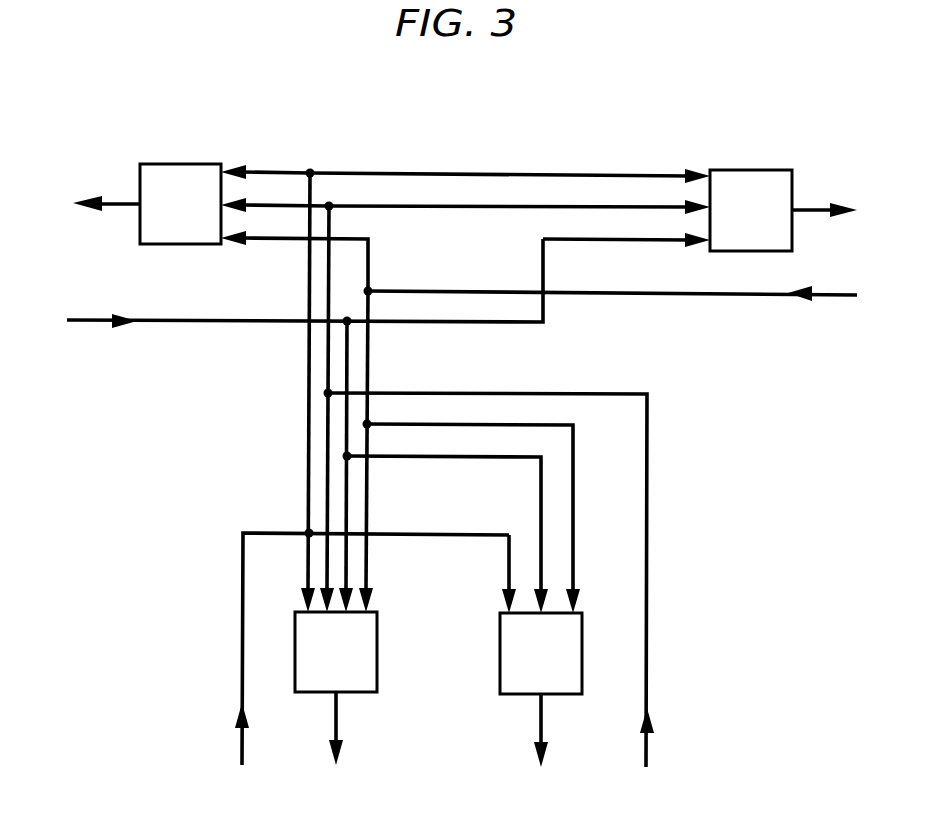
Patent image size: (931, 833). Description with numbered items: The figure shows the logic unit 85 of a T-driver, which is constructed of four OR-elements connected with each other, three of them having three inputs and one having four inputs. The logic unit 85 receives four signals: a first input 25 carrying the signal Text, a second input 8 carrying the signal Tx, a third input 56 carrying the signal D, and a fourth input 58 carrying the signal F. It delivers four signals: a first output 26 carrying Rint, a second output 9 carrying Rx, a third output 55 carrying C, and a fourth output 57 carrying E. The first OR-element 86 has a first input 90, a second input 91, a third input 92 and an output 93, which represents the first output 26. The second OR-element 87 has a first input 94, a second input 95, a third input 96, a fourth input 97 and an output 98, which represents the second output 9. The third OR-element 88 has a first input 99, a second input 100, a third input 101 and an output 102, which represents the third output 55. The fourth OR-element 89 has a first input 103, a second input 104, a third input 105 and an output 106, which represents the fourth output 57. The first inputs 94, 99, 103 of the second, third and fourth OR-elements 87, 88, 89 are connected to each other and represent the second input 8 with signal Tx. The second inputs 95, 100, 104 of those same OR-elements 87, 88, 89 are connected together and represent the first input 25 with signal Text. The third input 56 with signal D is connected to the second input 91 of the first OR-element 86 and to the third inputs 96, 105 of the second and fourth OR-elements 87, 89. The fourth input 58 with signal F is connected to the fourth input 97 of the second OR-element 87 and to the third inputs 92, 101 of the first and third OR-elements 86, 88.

The logic unit 85 is at (534, 97).
The third OR-element 88 is at (198, 172).
The fourth OR-element 89 is at (755, 170).
The second OR-element 87 is at (295, 657).
The first OR-element 86 is at (500, 655).
The first input of third OR-element 99 is at (228, 170).
The second input of third OR-element 100 is at (227, 208).
The third input of third OR-element 101 is at (227, 238).
The output of third OR-element 102 is at (137, 212).
The first input of fourth OR-element 103 is at (707, 175).
The second input of fourth OR-element 104 is at (707, 205).
The third input of fourth OR-element 105 is at (703, 242).
The output of fourth OR-element 106 is at (802, 203).
The first input of second OR-element 94 is at (304, 612).
The second input of second OR-element 95 is at (307, 603).
The third input of second OR-element 96 is at (358, 603).
The fourth input of second OR-element 97 is at (368, 610).
The output of second OR-element 98 is at (337, 696).
The first input of first OR-element 90 is at (505, 613).
The second input of first OR-element 91 is at (528, 612).
The third input of first OR-element 92 is at (578, 613).
The output of first OR-element 93 is at (537, 712).
The third output 55 is at (116, 200).
The third input 56 is at (80, 318).
The fourth output 57 is at (827, 203).
The fourth input 58 is at (835, 290).
The second input 8 is at (242, 745).
The second output 9 is at (333, 740).
The first input 25 is at (648, 752).
The first output 26 is at (542, 727).